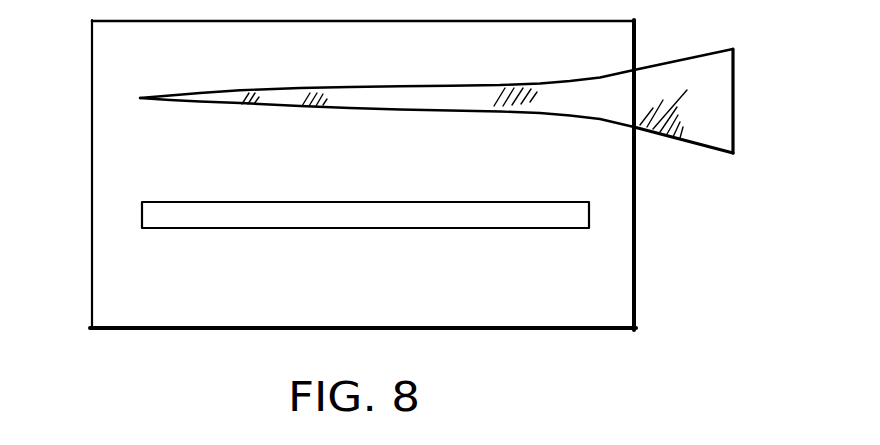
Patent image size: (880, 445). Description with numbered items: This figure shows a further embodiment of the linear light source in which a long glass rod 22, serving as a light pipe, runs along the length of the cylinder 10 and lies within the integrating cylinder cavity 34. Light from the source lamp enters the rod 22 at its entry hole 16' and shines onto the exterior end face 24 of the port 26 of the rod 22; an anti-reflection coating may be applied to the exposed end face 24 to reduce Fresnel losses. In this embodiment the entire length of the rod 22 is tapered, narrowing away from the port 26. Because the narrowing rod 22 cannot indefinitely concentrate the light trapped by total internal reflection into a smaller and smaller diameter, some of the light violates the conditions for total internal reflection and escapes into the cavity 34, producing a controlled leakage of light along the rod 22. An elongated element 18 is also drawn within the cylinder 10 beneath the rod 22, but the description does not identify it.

The cylinder 10 is at (97, 59).
The integrating cylinder cavity 34 is at (120, 285).
The electrode 18 is at (405, 229).
The glass rod 22 is at (430, 110).
The entry hole 16' is at (667, 70).
The exterior end face 24 is at (735, 103).
The port 26 is at (693, 142).